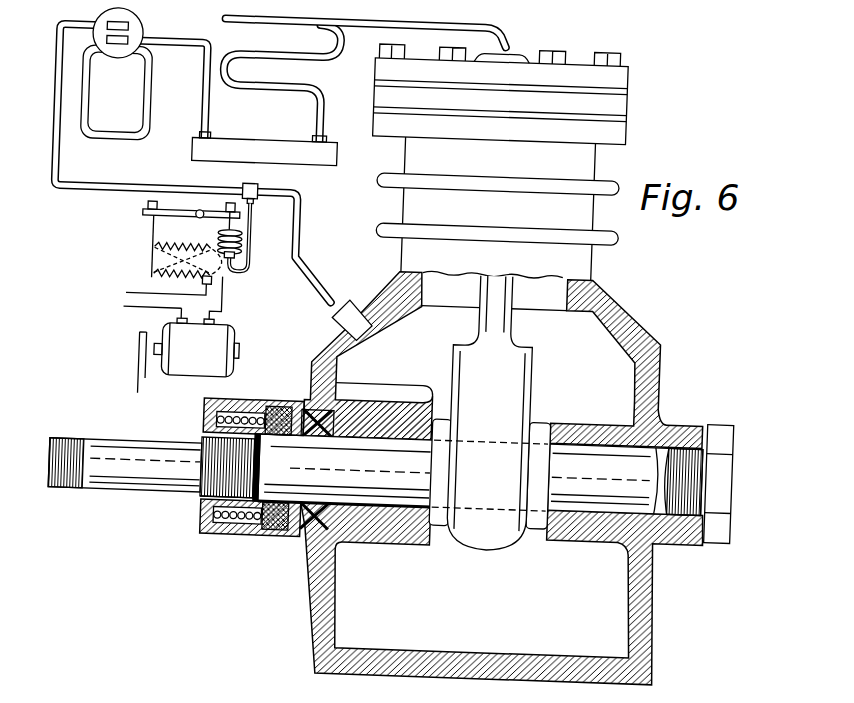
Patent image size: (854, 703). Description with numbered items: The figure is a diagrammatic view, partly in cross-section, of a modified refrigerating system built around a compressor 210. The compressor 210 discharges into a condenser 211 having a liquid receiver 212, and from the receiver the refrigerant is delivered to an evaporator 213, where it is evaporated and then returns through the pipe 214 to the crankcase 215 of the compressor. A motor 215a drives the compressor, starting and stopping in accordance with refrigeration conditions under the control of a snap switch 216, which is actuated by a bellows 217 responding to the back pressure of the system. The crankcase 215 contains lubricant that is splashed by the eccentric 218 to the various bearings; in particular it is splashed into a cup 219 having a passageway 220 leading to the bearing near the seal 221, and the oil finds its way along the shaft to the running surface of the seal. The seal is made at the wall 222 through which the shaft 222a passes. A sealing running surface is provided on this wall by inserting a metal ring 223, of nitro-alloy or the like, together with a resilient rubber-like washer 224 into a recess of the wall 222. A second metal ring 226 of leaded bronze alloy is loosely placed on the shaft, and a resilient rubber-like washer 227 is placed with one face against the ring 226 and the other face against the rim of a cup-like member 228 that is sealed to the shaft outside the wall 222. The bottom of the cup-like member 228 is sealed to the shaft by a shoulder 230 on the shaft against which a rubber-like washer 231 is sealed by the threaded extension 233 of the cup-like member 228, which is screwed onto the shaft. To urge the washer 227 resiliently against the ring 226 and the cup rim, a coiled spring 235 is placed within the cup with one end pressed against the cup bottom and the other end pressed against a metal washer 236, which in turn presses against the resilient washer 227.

The compressor 210 is at (628, 280).
The condenser 211 is at (303, 66).
The liquid receiver 212 is at (265, 146).
The evaporator 213 is at (152, 93).
The pipe 214 is at (310, 222).
The crankcase 215 is at (502, 627).
The motor 215a is at (235, 326).
The snap switch 216 is at (151, 250).
The bellows 217 is at (243, 244).
The eccentric 218 is at (540, 375).
The cup 219 is at (350, 394).
The passageway 220 is at (370, 410).
The seal 221 is at (206, 415).
The wall 222 is at (305, 522).
The shaft 222a is at (400, 480).
The metal ring 223 is at (302, 412).
The resilient rubber-like washer 224 is at (360, 437).
The second metal ring 226 is at (297, 437).
The resilient rubber-like washer 227 is at (270, 397).
The cup-like member 228 is at (230, 400).
The shoulder 230 is at (205, 456).
The rubber-like washer 231 is at (253, 500).
The threaded extension 233 is at (205, 500).
The coiled spring 235 is at (236, 530).
The metal washer 236 is at (258, 530).